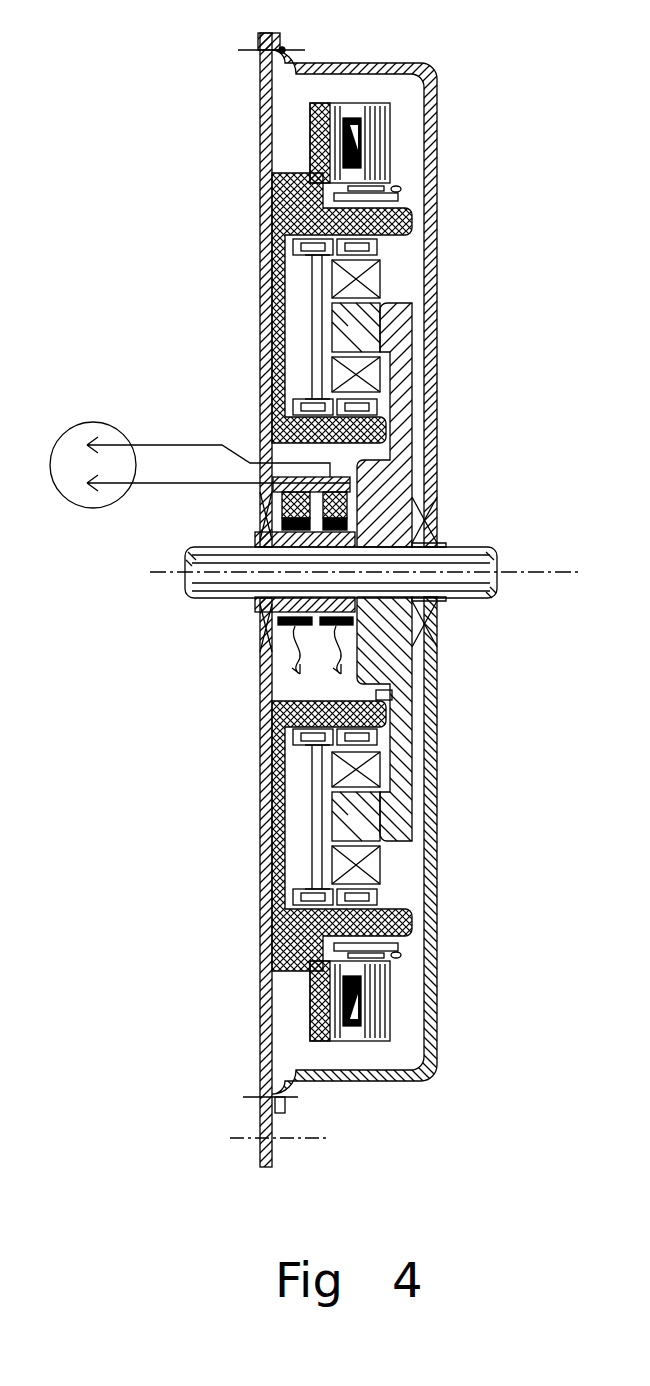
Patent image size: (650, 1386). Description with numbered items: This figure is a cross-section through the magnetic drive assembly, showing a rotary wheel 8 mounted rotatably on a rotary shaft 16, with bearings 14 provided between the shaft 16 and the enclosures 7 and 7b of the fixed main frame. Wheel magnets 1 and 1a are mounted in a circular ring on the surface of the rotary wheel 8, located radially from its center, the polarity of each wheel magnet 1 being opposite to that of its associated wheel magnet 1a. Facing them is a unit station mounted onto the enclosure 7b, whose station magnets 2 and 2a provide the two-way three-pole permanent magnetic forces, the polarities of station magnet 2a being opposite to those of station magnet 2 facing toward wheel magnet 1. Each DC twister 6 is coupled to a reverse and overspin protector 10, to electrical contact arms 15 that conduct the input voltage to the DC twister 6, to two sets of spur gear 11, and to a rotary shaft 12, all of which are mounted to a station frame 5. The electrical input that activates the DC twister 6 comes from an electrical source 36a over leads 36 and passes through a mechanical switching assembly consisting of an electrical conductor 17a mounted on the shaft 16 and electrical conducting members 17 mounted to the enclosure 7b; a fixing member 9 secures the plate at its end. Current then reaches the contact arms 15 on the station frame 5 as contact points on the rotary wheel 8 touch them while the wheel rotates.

The wheel magnet 1 is at (370, 815).
The wheel magnet 1a is at (372, 326).
The station magnet 2 is at (335, 290).
The station magnet 2a is at (358, 370).
The station frame 5 is at (262, 353).
The DC twister 6 is at (380, 103).
The enclosure 7 is at (437, 138).
The enclosure 7b is at (260, 185).
The rotary wheel 8 is at (393, 497).
The fixing member 9 is at (258, 50).
The reverse and overspin protector 10 is at (392, 193).
The spur gear 11 is at (360, 247).
The rotary shaft 12 is at (318, 330).
The bearing 14 is at (437, 627).
The electrical contact arm 15 is at (393, 697).
The rotary shaft 16 is at (497, 548).
The electrical conducting member 17 is at (265, 505).
The electrical conductor 17a is at (265, 643).
The lead wires 36 is at (330, 672).
The electrical source 36a is at (78, 432).